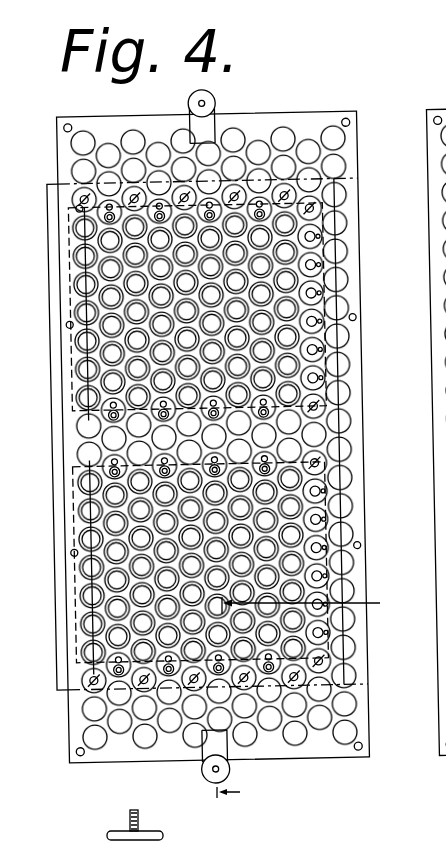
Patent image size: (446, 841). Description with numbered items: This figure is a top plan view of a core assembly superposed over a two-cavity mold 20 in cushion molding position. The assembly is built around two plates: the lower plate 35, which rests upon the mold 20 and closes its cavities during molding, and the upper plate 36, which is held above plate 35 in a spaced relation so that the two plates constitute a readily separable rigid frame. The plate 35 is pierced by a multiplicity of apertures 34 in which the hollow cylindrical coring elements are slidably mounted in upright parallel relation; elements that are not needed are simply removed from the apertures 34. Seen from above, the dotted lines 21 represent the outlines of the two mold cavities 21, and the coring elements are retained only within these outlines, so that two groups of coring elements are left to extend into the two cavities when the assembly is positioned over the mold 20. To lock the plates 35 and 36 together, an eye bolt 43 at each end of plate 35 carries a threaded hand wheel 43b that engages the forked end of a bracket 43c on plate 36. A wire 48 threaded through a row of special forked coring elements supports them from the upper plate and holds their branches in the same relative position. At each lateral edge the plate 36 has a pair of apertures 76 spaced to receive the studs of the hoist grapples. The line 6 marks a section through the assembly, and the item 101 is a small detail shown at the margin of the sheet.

The mold 20 is at (47, 645).
The mold cavities 21 is at (72, 307).
The apertures of the plate 34 is at (173, 728).
The plate 35 is at (117, 752).
The plate 36 is at (282, 838).
The eye bolt 43 is at (204, 102).
The hand wheel 43b is at (189, 97).
The bracket 43c is at (205, 130).
The wire 48 is at (88, 385).
The apertures 76 is at (67, 327).
The section line 6 is at (311, 696).
The screw 101 is at (104, 833).